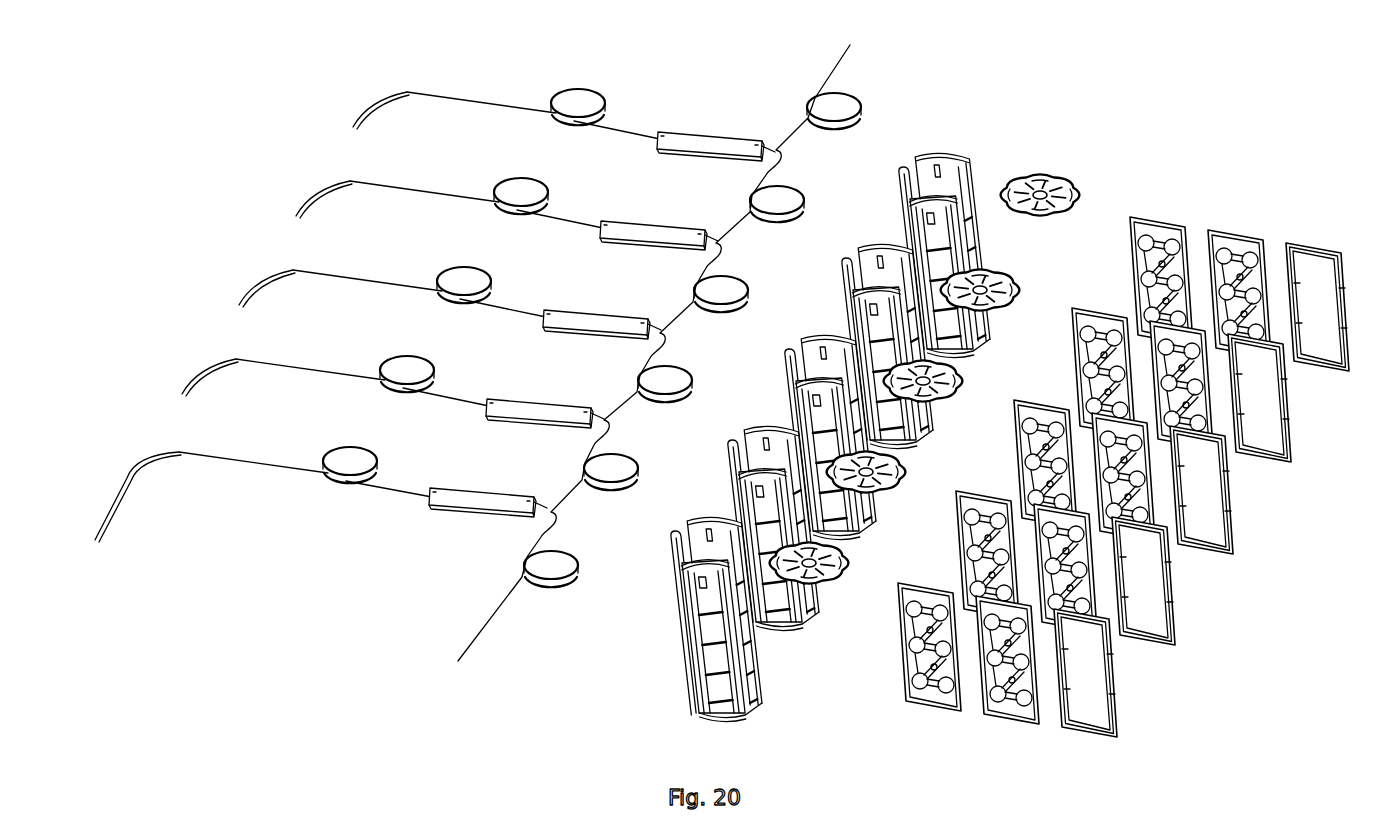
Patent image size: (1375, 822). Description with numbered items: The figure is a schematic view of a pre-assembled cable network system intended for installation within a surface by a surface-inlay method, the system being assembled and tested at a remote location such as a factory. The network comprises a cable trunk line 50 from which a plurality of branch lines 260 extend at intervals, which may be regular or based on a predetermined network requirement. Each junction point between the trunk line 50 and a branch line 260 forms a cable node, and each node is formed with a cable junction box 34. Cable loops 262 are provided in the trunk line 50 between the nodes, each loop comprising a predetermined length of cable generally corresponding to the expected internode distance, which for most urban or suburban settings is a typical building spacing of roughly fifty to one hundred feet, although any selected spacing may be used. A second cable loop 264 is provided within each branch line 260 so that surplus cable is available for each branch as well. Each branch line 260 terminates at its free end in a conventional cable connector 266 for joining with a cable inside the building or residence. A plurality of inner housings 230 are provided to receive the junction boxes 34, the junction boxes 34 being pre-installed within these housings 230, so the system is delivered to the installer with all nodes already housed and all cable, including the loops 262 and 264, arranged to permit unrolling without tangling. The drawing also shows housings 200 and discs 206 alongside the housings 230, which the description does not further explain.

The housing 200 is at (950, 148).
The disc 206 is at (1073, 170).
The inner housing 230 is at (1190, 215).
The cable connector 266 is at (118, 540).
The branch line 260 is at (267, 467).
The second cable loop 264 is at (340, 477).
The cable junction box 34 is at (450, 508).
The cable trunk line 50 is at (458, 661).
The cable loop 262 is at (540, 582).